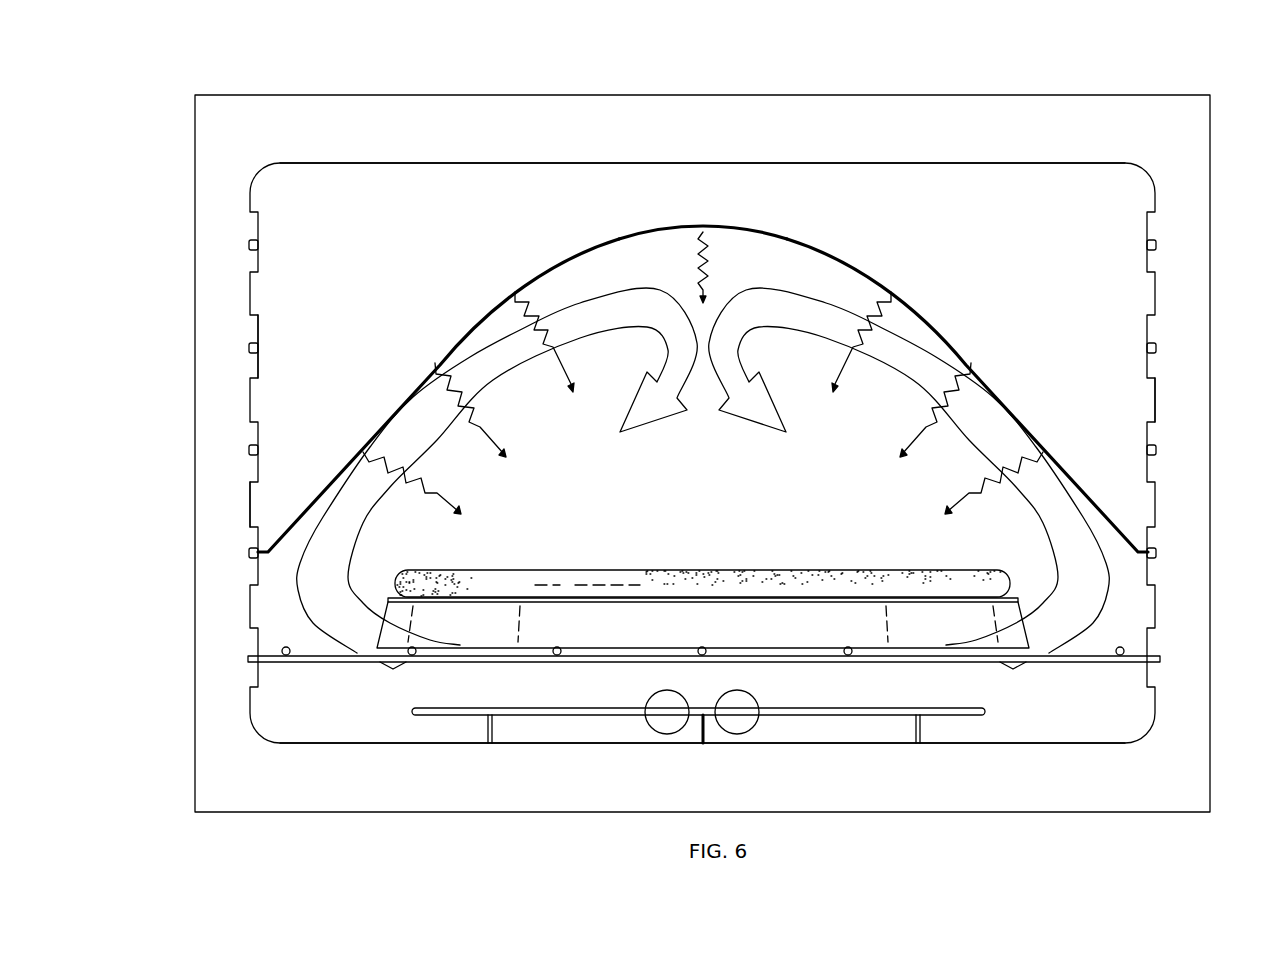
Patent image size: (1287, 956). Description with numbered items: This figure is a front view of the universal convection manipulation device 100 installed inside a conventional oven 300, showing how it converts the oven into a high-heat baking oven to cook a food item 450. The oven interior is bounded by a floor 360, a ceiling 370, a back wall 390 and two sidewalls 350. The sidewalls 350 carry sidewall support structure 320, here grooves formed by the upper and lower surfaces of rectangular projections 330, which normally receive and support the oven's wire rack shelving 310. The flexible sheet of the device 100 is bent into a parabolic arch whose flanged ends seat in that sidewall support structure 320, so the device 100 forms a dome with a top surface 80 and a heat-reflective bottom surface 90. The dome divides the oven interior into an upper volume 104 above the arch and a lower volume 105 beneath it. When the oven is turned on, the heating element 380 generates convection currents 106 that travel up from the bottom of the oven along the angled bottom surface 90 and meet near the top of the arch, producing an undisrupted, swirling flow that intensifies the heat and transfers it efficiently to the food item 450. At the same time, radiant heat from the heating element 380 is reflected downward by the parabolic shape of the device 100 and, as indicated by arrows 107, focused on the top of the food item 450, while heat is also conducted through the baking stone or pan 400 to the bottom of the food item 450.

The top surface 80 is at (630, 228).
The bottom surface 90 is at (440, 360).
The universal convection manipulation device 100 is at (847, 241).
The upper volume 104 is at (1060, 185).
The lower volume 105 is at (980, 432).
The convection currents 106 is at (495, 357).
The arrows 107 is at (522, 300).
The conventional oven 300 is at (692, 120).
The wire rack shelving 310 is at (318, 657).
The sidewall support structure 320 is at (232, 344).
The rectangular projections 330 is at (258, 333).
The sidewalls 350 is at (258, 498).
The floor 360 is at (1000, 738).
The ceiling 370 is at (473, 165).
The heating element 380 is at (608, 707).
The back wall 390 is at (337, 249).
The baking stone or pan 400 is at (800, 625).
The food item 450 is at (637, 570).